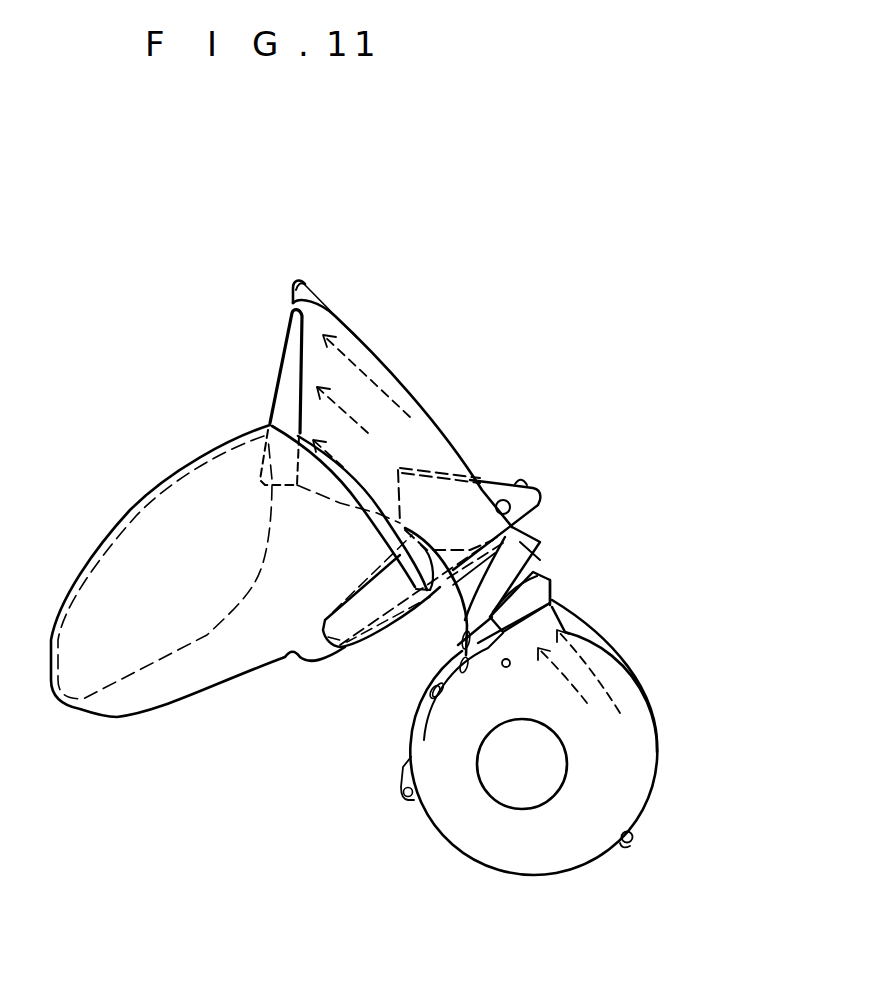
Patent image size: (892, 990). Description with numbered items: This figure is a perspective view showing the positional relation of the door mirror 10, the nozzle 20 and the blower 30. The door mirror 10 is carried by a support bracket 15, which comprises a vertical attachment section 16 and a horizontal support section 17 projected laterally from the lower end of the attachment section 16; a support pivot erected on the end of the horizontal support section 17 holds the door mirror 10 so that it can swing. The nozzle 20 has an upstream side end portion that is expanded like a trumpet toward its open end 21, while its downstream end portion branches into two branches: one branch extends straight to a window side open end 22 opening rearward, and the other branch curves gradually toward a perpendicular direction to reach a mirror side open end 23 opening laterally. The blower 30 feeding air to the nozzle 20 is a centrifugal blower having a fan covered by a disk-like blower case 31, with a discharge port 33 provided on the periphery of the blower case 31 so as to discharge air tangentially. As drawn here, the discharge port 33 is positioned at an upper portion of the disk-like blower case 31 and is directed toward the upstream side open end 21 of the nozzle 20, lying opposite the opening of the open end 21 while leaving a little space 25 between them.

The door mirror 10 is at (147, 720).
The support bracket 15 is at (543, 472).
The vertical attachment section 16 is at (490, 480).
The horizontal support section 17 is at (363, 650).
The nozzle 20 is at (413, 370).
The open end 21 is at (532, 562).
The window side open end 22 is at (295, 303).
The mirror side open end 23 is at (277, 377).
The space 25 is at (540, 570).
The blower 30 is at (668, 693).
The blower case 31 is at (542, 843).
The discharge port 33 is at (550, 574).